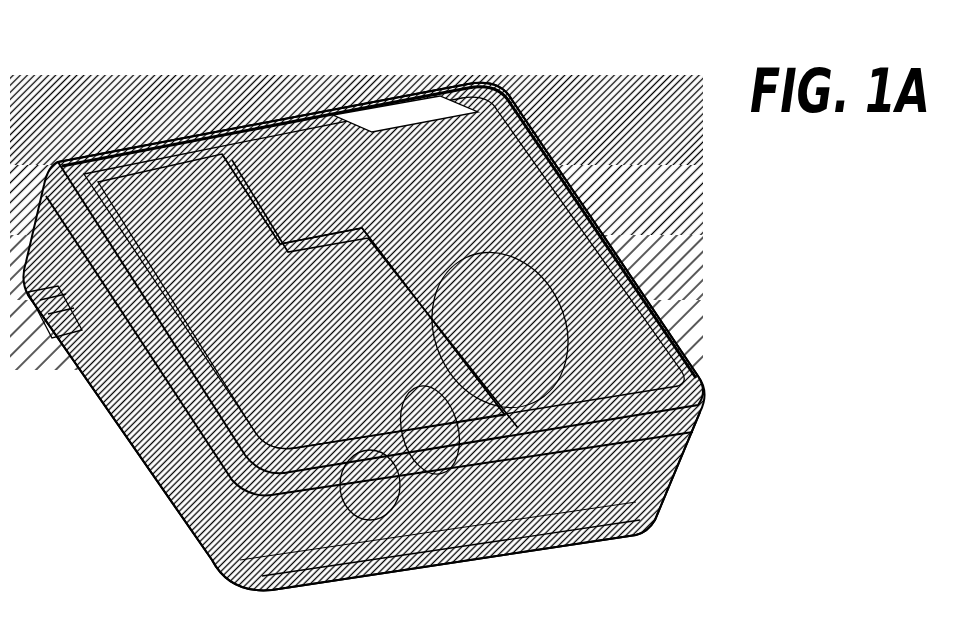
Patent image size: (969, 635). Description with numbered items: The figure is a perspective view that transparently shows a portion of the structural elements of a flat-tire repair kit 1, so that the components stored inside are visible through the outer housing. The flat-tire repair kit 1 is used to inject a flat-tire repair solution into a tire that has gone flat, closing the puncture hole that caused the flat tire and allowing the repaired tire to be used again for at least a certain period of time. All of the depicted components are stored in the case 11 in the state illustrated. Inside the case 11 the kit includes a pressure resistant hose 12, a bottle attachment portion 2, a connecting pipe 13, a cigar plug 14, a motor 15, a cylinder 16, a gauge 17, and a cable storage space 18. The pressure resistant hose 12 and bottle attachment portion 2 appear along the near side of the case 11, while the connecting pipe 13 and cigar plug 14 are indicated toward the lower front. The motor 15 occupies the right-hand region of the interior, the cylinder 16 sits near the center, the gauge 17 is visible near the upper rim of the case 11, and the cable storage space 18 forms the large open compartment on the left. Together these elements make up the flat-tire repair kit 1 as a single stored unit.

The flat-tire repair kit 1 is at (376, 313).
The bottle attachment portion 2 is at (180, 507).
The case 11 is at (553, 163).
The pressure resistant hose 12 is at (113, 403).
The connecting pipe 13 is at (398, 570).
The cigar plug 14 is at (463, 560).
The motor 15 is at (660, 318).
The cylinder 16 is at (273, 108).
The gauge 17 is at (380, 106).
The cable storage space 18 is at (147, 128).